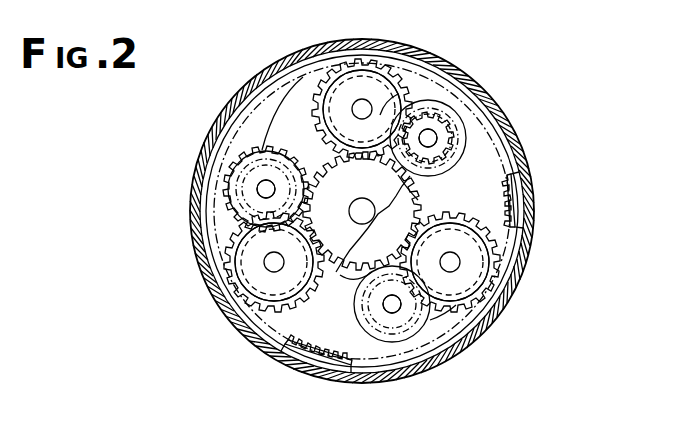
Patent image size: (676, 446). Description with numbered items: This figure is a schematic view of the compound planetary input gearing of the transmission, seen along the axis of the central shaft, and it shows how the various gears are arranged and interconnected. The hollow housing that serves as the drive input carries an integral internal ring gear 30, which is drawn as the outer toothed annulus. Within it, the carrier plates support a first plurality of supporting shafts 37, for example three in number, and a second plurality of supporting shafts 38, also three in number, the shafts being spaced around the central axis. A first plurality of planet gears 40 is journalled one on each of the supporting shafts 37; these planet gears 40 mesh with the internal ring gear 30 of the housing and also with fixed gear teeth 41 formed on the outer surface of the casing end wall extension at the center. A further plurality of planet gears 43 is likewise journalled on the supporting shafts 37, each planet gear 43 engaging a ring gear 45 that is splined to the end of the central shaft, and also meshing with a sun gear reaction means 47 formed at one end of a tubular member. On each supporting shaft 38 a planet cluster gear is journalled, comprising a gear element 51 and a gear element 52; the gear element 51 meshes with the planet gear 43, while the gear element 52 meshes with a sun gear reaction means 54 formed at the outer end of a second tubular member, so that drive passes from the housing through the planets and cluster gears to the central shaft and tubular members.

The ring gear 30 is at (524, 252).
The supporting shafts 37 is at (352, 110).
The supporting shafts 38 is at (276, 188).
The planet gears 40 is at (372, 62).
The fixed gear teeth 41 is at (333, 155).
The planet gears 43 is at (400, 93).
The ring gear 45 is at (513, 204).
The sun gear reaction means 47 is at (422, 212).
The gear element 51 is at (430, 320).
The gear element 52 is at (447, 102).
The sun gear reaction means 54 is at (372, 272).